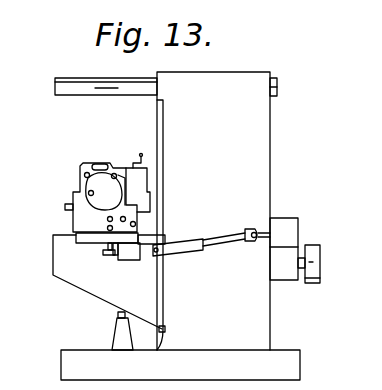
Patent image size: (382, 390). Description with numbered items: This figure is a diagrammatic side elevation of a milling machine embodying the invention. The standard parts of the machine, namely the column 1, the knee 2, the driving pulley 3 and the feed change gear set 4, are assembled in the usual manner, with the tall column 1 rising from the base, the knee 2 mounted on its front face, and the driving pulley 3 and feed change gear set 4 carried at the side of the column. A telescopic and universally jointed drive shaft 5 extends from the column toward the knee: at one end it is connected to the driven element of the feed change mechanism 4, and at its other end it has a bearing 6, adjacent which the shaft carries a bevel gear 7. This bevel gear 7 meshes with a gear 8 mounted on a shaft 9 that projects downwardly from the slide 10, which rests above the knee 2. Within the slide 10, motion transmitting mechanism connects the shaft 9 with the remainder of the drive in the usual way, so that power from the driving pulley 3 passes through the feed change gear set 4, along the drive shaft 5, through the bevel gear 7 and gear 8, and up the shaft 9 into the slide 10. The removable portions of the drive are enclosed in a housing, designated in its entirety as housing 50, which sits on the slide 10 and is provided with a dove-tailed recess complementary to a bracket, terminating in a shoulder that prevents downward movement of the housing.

The column 1 is at (260, 163).
The knee 2 is at (90, 293).
The driving pulley 3 is at (318, 273).
The feed change gear set 4 is at (296, 239).
The telescopic and universally jointed drive shaft 5 is at (215, 236).
The bearing 6 is at (128, 258).
The bevel gear 7 is at (114, 256).
The gear 8 is at (106, 256).
The shaft 9 is at (108, 245).
The slide 10 is at (82, 238).
The housing 50 is at (82, 204).